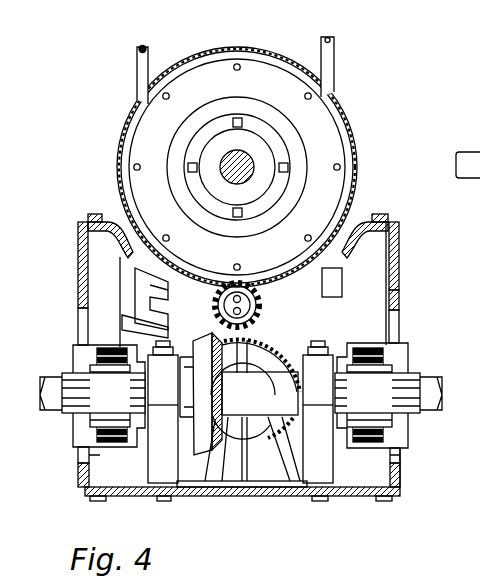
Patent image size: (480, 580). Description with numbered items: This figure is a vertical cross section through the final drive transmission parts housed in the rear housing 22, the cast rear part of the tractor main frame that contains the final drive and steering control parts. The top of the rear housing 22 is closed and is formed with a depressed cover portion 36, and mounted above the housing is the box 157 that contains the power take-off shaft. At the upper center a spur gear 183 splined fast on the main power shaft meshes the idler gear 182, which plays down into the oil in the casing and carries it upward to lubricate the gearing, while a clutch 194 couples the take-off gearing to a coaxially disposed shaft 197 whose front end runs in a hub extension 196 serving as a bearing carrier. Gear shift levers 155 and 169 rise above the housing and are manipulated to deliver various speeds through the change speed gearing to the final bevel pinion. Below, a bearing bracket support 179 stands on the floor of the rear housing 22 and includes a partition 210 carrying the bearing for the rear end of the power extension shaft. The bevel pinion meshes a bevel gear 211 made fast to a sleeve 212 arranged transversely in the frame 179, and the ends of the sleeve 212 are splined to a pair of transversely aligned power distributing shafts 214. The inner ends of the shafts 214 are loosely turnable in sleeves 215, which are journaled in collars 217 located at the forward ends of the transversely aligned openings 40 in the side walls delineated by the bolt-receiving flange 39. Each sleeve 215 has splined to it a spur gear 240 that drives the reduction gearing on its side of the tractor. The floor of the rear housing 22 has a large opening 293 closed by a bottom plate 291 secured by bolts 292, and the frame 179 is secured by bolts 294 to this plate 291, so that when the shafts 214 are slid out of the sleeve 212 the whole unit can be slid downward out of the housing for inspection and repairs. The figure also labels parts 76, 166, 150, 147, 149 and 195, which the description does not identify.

The gear shift lever 155 is at (137, 58).
The gear shift lever 169 is at (331, 50).
The box 157 is at (118, 181).
The shaft 197 is at (221, 165).
The hub extension 196 is at (280, 138).
The clutch 194 is at (330, 156).
The hub keys 195 is at (288, 172).
The depressed cover portion 36 is at (128, 258).
The housing right wall 76 is at (378, 257).
The bracket 166 is at (335, 288).
The bolt-receiving flange 39 is at (400, 303).
The inner wall 150 is at (137, 272).
The stepped bracket 147 is at (150, 299).
The lower bracket 149 is at (122, 317).
The spur gear 183 is at (268, 303).
The idler gear 182 is at (277, 342).
The sleeve 212 is at (260, 393).
The bevel gear 211 is at (202, 433).
The partition 210 is at (257, 460).
The collar 217 is at (78, 345).
The sleeve 215 is at (72, 368).
The power distributing shaft 214 is at (42, 395).
The opening 40 is at (84, 454).
The spur gear 240 is at (80, 470).
The bearing bracket support 179 is at (150, 487).
The bolts 294 is at (228, 520).
The bottom plate 291 is at (345, 497).
The opening 293 is at (360, 494).
The bolts 292 is at (90, 500).
The rear housing 22 is at (400, 490).